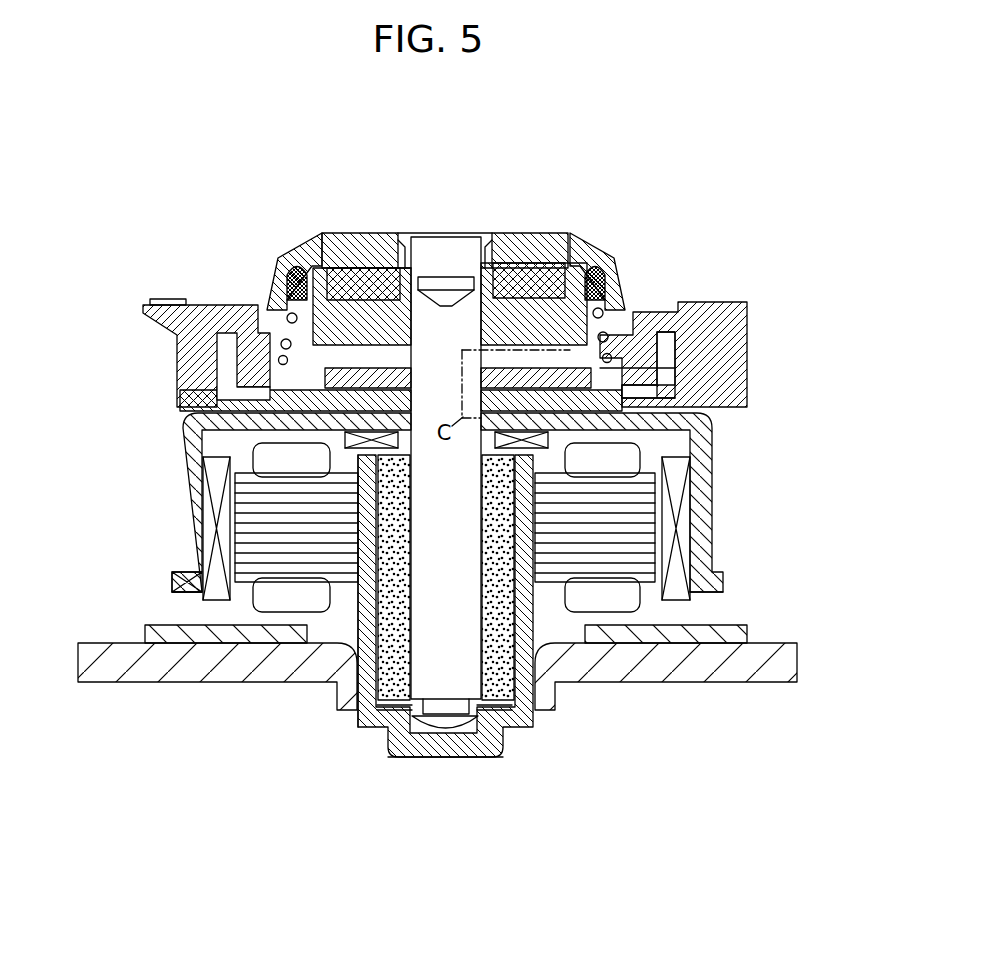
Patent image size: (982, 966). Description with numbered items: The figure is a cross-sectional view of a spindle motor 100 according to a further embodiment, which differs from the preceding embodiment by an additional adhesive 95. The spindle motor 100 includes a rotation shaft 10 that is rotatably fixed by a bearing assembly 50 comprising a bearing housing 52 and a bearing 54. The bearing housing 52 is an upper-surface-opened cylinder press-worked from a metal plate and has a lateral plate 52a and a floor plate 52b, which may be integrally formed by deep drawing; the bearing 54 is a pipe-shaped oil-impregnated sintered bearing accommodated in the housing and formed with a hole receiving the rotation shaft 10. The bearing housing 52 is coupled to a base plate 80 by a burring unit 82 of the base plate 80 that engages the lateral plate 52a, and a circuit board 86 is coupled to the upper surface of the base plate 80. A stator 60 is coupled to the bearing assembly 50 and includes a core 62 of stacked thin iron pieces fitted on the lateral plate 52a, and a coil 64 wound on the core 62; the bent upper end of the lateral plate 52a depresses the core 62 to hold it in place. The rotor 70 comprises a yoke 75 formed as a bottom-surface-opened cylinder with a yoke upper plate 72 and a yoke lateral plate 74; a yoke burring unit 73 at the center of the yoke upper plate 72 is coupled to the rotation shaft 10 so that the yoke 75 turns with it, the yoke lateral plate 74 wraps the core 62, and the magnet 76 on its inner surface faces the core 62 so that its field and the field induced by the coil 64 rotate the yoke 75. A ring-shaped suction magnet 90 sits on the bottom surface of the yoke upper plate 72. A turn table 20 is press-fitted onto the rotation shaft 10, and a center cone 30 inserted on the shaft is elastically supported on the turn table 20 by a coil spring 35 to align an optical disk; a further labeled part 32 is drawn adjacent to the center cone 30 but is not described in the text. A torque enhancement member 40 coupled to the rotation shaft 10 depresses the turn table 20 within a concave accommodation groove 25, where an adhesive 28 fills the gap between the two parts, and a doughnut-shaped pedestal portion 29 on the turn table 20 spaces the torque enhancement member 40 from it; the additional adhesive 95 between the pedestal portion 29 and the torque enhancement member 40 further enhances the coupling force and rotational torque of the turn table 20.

The spindle motor 100 is at (493, 186).
The rotation shaft 10 is at (447, 342).
The turn table 20 is at (707, 320).
The accommodation groove 25 is at (262, 318).
The adhesive 28 is at (262, 332).
The pedestal portion 29 is at (262, 410).
The center cone 30 is at (614, 246).
The rotor core 32 is at (330, 272).
The coil spring 35 is at (600, 313).
The torque enhancement member 40 is at (345, 369).
The bearing assembly 50 is at (505, 838).
The bearing housing 52 is at (487, 759).
The lateral plate 52a is at (357, 637).
The floor plate 52b is at (426, 758).
The bearing 54 is at (507, 656).
The stator 60 is at (683, 772).
The core 62 is at (655, 574).
The coil 64 is at (619, 600).
The rotor 70 is at (110, 588).
The yoke upper plate 72 is at (273, 418).
The yoke burring unit 73 is at (690, 464).
The yoke lateral plate 74 is at (203, 518).
The yoke 75 is at (108, 465).
The magnet 76 is at (184, 582).
The base plate 80 is at (161, 668).
The burring unit 82 is at (534, 713).
The circuit board 86 is at (229, 634).
The suction magnet 90 is at (693, 416).
The additional adhesive 95 is at (600, 368).